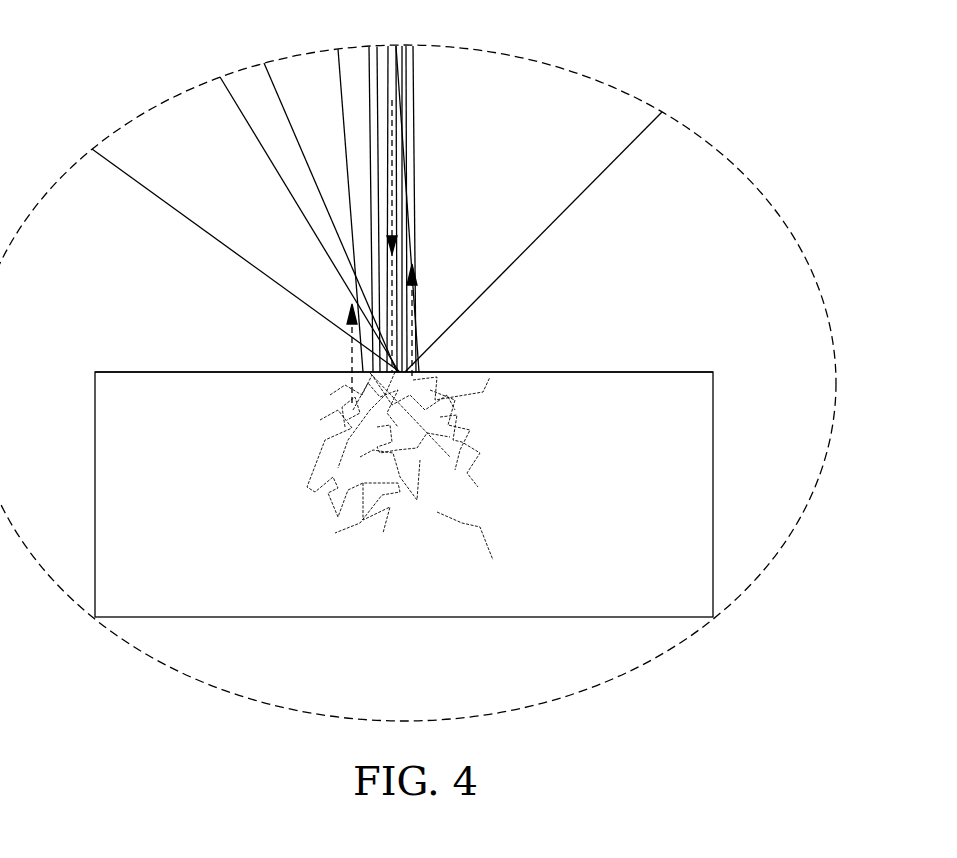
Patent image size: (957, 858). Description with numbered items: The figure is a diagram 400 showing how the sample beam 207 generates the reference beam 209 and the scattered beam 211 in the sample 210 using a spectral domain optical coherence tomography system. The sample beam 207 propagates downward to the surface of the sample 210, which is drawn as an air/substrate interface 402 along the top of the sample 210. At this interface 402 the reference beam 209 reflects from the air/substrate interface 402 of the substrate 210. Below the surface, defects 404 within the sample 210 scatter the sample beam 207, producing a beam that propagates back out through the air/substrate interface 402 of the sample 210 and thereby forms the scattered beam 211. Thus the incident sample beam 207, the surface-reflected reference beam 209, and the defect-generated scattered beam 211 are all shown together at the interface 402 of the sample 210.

The diagram 400 is at (752, 141).
The air/substrate interface 402 is at (140, 372).
The defects 404 is at (452, 438).
The sample beam 207 is at (392, 151).
The reference beam 209 is at (413, 343).
The scattered beam 211 is at (352, 400).
The sample 210 is at (183, 598).